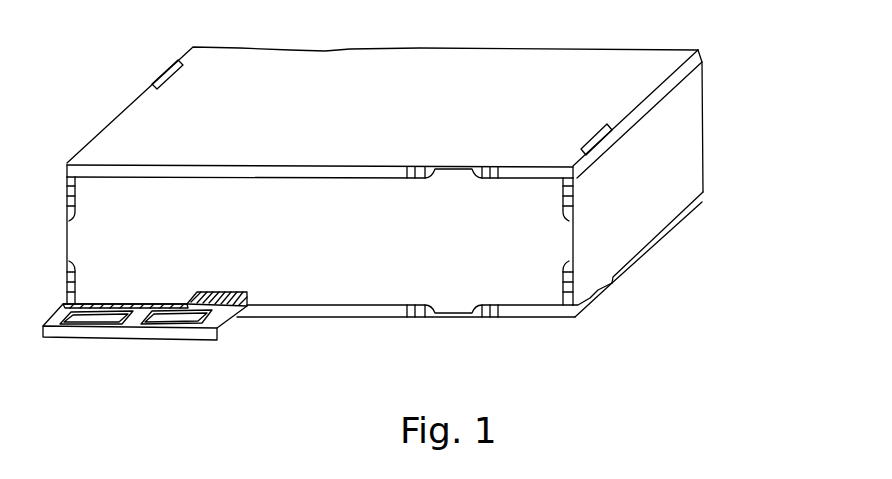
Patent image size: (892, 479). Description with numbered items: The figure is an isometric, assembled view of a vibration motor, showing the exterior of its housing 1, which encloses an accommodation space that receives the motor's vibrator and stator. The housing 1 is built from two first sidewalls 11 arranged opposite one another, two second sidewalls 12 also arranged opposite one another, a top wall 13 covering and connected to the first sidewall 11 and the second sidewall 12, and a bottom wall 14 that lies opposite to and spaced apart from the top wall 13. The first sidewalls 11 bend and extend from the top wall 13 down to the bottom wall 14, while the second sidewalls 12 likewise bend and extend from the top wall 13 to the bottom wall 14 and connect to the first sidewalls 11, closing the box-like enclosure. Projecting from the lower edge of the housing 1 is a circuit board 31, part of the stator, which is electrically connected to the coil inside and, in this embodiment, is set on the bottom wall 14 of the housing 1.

The housing 1 is at (470, 198).
The first sidewall 11 is at (428, 256).
The second sidewall 12 is at (660, 161).
The top wall 13 is at (665, 92).
The bottom wall 14 is at (657, 242).
The circuit board 31 is at (140, 313).